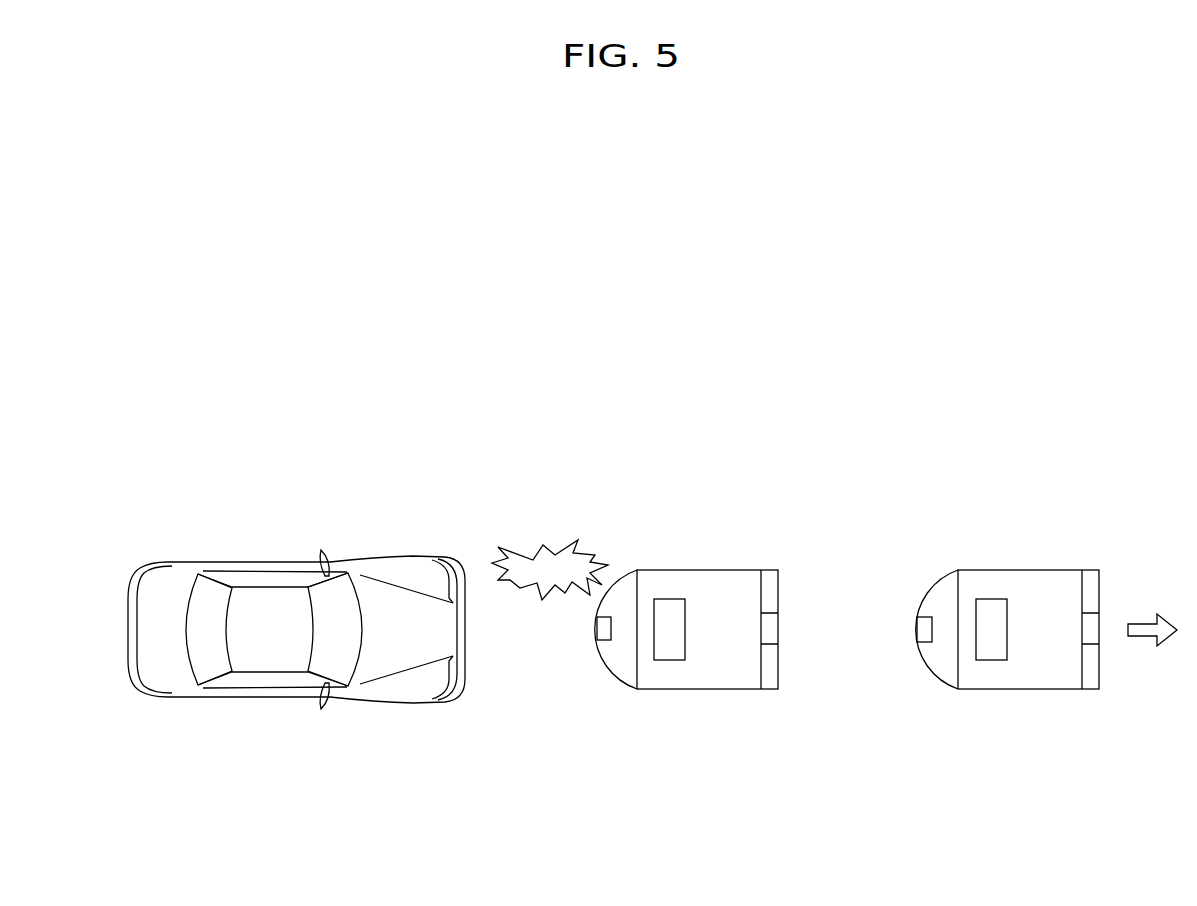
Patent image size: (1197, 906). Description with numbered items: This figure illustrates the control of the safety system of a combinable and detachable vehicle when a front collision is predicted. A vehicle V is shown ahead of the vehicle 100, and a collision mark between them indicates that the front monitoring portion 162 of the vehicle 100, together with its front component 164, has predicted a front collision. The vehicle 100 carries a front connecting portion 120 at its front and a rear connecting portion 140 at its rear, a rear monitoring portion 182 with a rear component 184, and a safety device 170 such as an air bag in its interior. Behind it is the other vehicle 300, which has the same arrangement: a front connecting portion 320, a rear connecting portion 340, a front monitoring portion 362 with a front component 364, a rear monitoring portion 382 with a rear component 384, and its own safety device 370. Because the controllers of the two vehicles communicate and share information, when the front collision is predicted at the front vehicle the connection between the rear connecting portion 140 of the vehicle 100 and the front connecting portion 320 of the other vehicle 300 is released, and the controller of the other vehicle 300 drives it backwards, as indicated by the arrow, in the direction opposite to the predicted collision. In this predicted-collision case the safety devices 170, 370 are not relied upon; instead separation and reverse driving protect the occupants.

The vehicle V is at (263, 692).
The vehicle 100 is at (722, 614).
The front connecting portion 120 is at (600, 635).
The rear connecting portion 140 is at (773, 633).
The front monitoring portion 162 is at (625, 586).
The front component 164 is at (643, 576).
The safety device 170 is at (668, 610).
The rear monitoring portion 182 is at (770, 578).
The rear component 184 is at (791, 581).
The other vehicle 300 is at (1005, 614).
The front connecting portion of the other vehicle 320 is at (920, 633).
The rear connecting portion of the other vehicle 340 is at (1088, 633).
The front monitoring portion of the other vehicle 362 is at (946, 585).
The front component of the other vehicle 364 is at (967, 576).
The safety device of the other vehicle 370 is at (990, 612).
The rear monitoring portion of the other vehicle 382 is at (1091, 580).
The rear component of the other vehicle 384 is at (1115, 581).